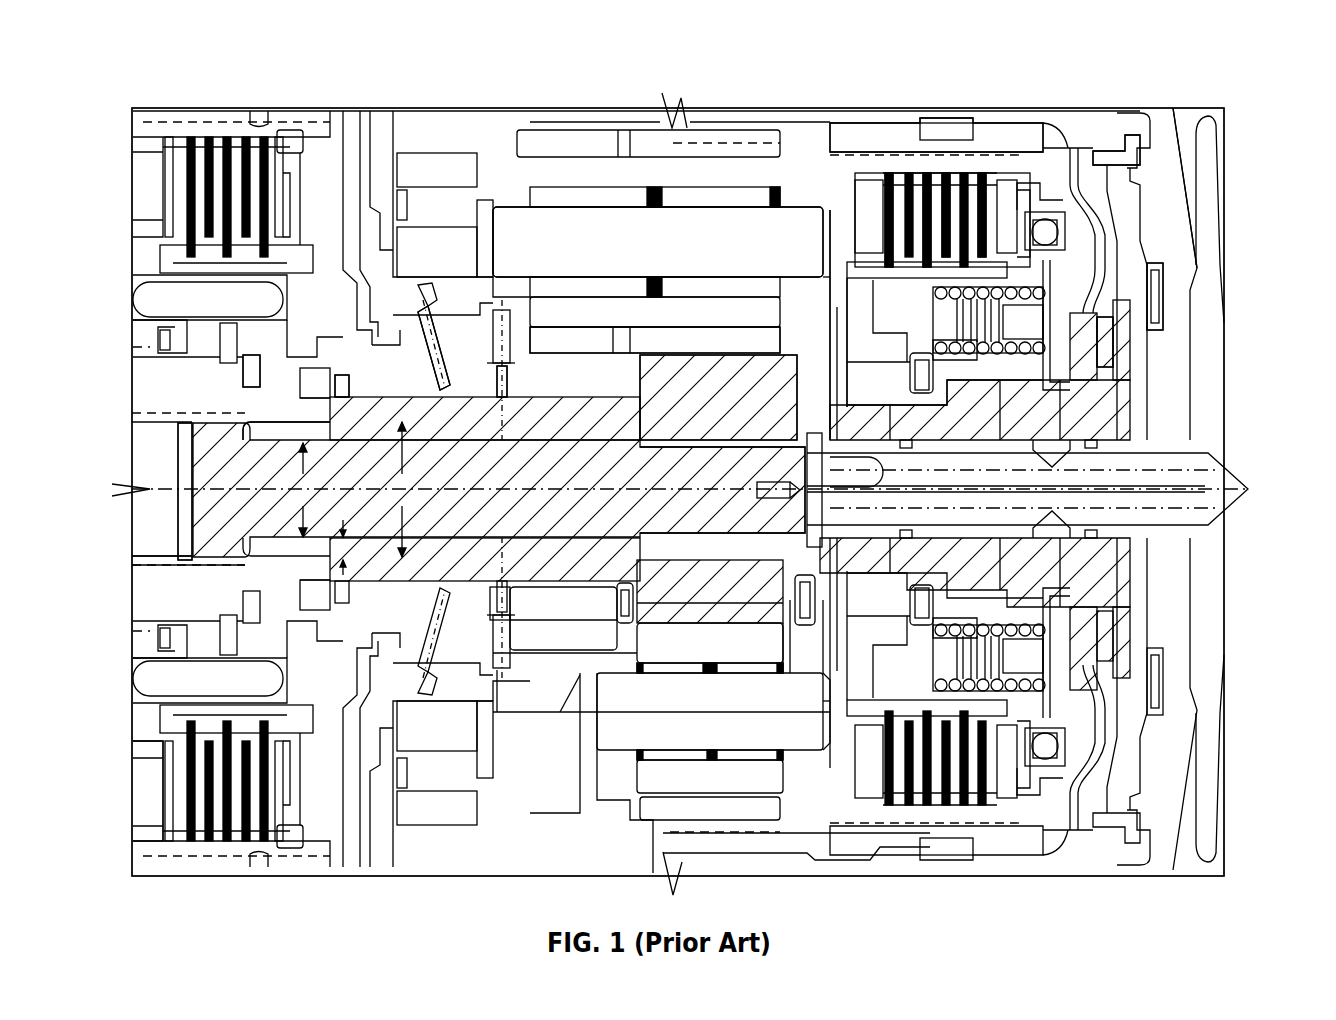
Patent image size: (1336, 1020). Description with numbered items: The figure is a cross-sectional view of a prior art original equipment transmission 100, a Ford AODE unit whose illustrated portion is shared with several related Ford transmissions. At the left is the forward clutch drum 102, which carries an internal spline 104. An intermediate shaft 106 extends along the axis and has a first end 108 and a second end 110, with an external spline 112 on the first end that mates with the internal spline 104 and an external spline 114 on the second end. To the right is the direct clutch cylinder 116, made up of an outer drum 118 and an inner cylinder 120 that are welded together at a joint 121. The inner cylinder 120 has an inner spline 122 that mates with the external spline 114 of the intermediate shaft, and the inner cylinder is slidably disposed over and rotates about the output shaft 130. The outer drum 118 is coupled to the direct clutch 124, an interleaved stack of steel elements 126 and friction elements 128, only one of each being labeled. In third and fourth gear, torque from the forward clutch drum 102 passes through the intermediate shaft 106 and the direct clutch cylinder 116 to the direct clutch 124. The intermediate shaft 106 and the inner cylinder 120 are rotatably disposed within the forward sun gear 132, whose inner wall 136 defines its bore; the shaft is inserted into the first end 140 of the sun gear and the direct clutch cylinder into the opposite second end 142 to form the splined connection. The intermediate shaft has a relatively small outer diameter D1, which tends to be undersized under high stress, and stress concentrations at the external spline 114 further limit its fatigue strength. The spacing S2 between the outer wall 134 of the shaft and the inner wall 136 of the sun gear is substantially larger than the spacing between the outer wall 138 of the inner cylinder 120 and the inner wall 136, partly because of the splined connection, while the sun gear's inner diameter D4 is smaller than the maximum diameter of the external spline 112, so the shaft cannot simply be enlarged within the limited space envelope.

The transmission 100 is at (1248, 92).
The forward clutch drum 102 is at (141, 613).
The internal spline 104 is at (133, 560).
The intermediate shaft 106 is at (463, 523).
The first end 108 is at (200, 462).
The second end 110 is at (798, 521).
The external spline 112 is at (225, 410).
The external spline 114 is at (710, 445).
The direct clutch cylinder 116 is at (1124, 342).
The outer drum 118 is at (1073, 158).
The inner cylinder 120 is at (850, 405).
The joint 121 is at (1094, 318).
The inner spline 122 is at (637, 392).
The direct clutch 124 is at (938, 103).
The steel elements 126 is at (957, 172).
The friction elements 128 is at (925, 170).
The output shaft 130 is at (1232, 462).
The forward sun gear 132 is at (497, 387).
The outer wall 134 is at (343, 415).
The inner wall 136 is at (388, 420).
The outer wall 138 is at (772, 398).
The first end 140 is at (270, 392).
The second end 142 is at (808, 612).
The outer diameter D1 is at (303, 490).
The inner diameter D4 is at (402, 489).
The spacing S2 is at (343, 548).